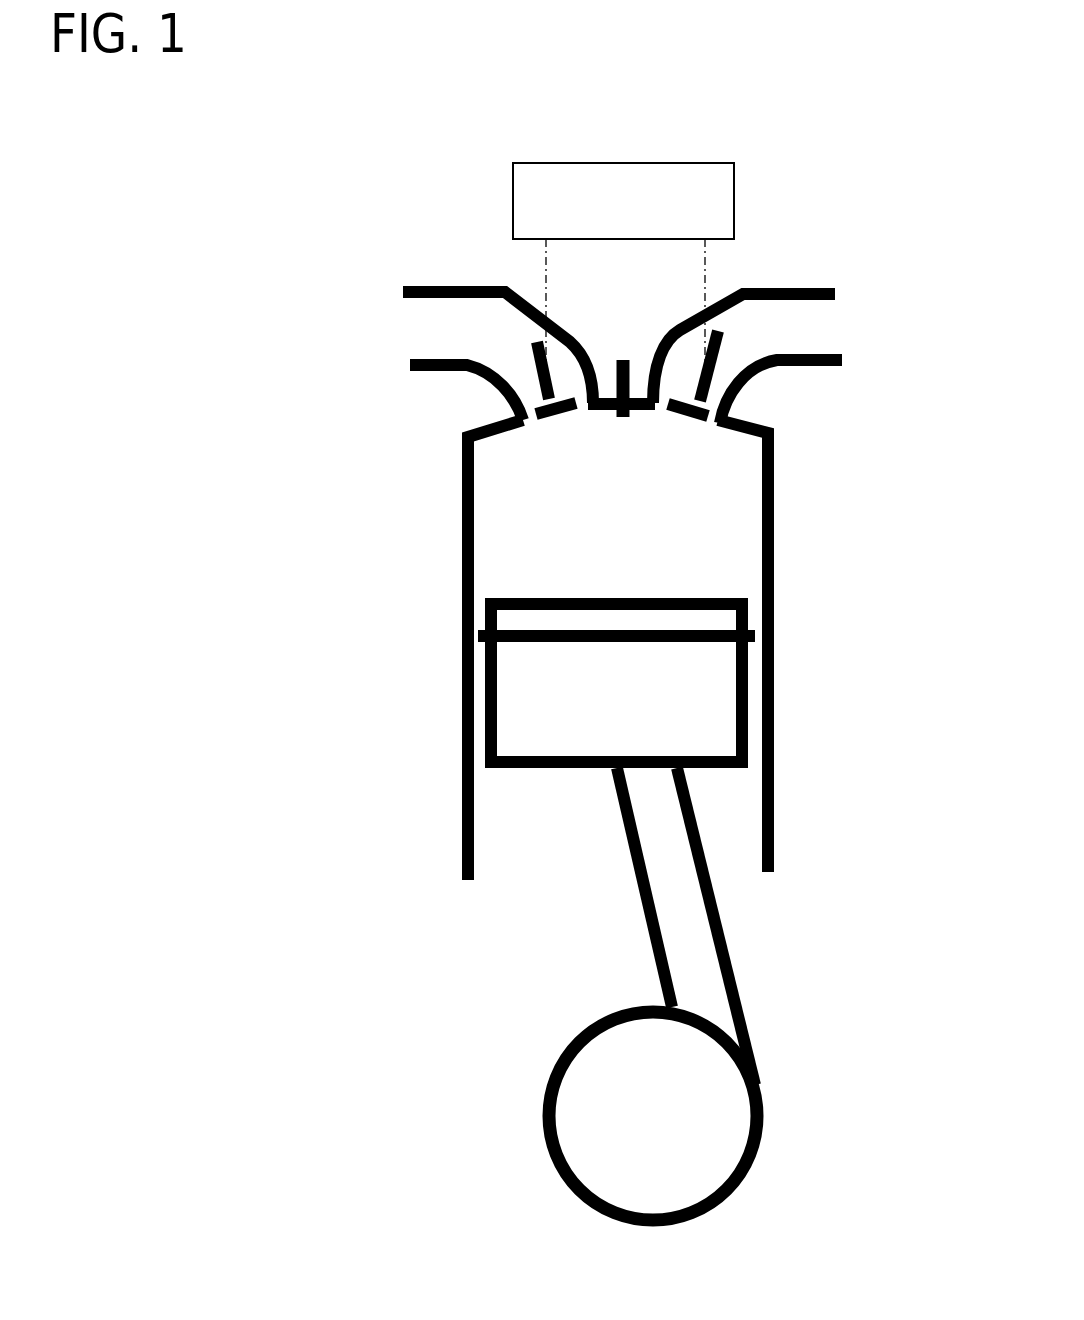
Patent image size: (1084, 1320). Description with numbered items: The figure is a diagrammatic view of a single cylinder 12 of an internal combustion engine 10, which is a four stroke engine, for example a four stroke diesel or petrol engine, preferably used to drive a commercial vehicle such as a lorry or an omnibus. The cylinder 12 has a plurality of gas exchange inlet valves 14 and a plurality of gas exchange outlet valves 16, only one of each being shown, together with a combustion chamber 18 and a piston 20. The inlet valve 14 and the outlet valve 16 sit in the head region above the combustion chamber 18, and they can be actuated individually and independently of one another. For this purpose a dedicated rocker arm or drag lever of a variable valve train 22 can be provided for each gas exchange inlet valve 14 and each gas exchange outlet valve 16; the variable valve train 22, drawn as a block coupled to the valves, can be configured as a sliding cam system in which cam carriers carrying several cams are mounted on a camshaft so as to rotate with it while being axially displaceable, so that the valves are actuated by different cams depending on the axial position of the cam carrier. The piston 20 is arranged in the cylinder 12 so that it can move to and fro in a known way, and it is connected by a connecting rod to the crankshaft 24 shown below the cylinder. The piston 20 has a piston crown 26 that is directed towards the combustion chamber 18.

The internal combustion engine 10 is at (632, 83).
The cylinder 12 is at (318, 206).
The gas exchange inlet valve 14 is at (537, 377).
The gas exchange outlet valve 16 is at (713, 373).
The combustion chamber 18 is at (673, 503).
The piston 20 is at (697, 687).
The variable valve train 22 is at (727, 185).
The crankshaft 24 is at (720, 1137).
The piston crown 26 is at (540, 600).